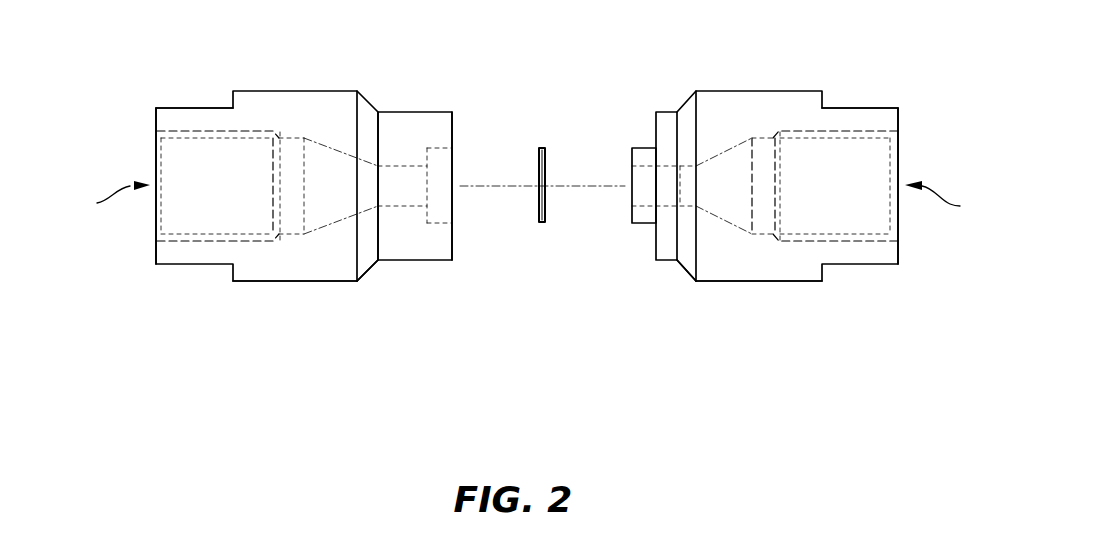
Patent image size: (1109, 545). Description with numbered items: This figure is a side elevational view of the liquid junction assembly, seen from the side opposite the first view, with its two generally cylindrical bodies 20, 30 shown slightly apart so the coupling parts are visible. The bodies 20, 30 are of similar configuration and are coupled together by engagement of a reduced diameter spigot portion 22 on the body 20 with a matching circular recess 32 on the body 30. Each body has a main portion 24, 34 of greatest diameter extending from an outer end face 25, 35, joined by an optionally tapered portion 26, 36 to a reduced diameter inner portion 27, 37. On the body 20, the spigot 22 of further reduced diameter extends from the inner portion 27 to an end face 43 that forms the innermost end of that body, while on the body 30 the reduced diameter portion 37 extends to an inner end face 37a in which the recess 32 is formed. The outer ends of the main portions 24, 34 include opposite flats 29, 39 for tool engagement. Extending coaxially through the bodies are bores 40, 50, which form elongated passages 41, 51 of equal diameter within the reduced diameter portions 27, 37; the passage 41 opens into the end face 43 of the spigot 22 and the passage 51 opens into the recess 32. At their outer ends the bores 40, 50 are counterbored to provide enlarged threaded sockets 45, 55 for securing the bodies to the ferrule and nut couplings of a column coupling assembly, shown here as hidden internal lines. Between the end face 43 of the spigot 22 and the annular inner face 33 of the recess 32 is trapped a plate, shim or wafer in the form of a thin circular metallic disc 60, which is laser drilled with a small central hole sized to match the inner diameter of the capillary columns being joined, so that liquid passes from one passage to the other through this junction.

The body 20 is at (789, 92).
The spigot portion 22 is at (640, 224).
The main portion 24 is at (760, 282).
The outer end face 25 is at (898, 118).
The tapered portion 26 is at (684, 266).
The reduced diameter inner portion 27 is at (667, 112).
The flats 29 is at (857, 108).
The body 30 is at (297, 92).
The circular recess 32 is at (428, 215).
The annular inner face 33 is at (429, 211).
The main portion 34 is at (293, 282).
The outer end face 35 is at (156, 118).
The tapered portion 36 is at (368, 270).
The reduced diameter inner portion 37 is at (413, 262).
The inner end face 37a is at (452, 130).
The flats 39 is at (193, 108).
The bore 40 is at (944, 198).
The elongated passage 41 is at (632, 197).
The end face 43 is at (631, 216).
The threaded socket 45 is at (860, 234).
The bore 50 is at (111, 198).
The elongated passage 51 is at (417, 172).
The threaded socket 55 is at (193, 233).
The disc 60 is at (541, 148).